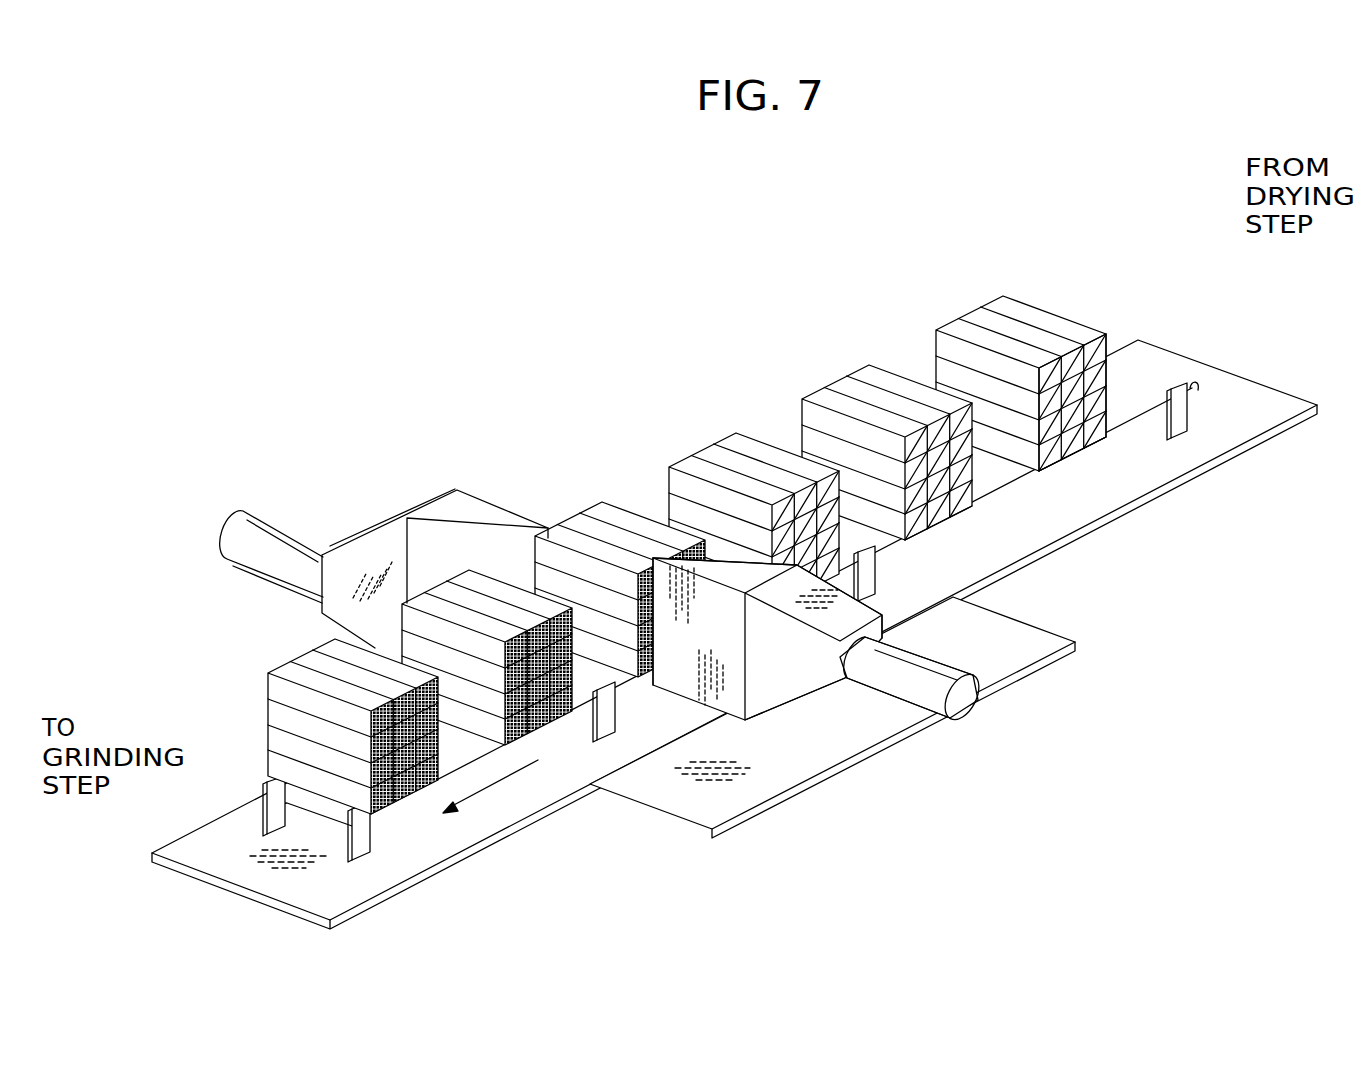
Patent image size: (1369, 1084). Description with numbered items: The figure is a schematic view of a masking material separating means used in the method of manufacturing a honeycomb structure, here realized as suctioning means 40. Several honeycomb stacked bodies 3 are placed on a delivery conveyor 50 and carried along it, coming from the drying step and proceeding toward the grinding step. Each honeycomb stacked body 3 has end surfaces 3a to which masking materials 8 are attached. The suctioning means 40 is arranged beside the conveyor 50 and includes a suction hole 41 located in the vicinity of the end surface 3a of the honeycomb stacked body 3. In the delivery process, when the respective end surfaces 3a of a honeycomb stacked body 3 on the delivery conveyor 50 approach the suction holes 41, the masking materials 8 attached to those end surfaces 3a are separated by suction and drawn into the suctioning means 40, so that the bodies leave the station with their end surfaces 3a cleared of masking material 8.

The honeycomb stacked body 3 is at (307, 677).
The end surface 3a is at (1104, 440).
The masking material 8 is at (1082, 410).
The suctioning means 40 is at (480, 484).
The suction hole 41 is at (553, 527).
The delivery conveyor 50 is at (1152, 376).